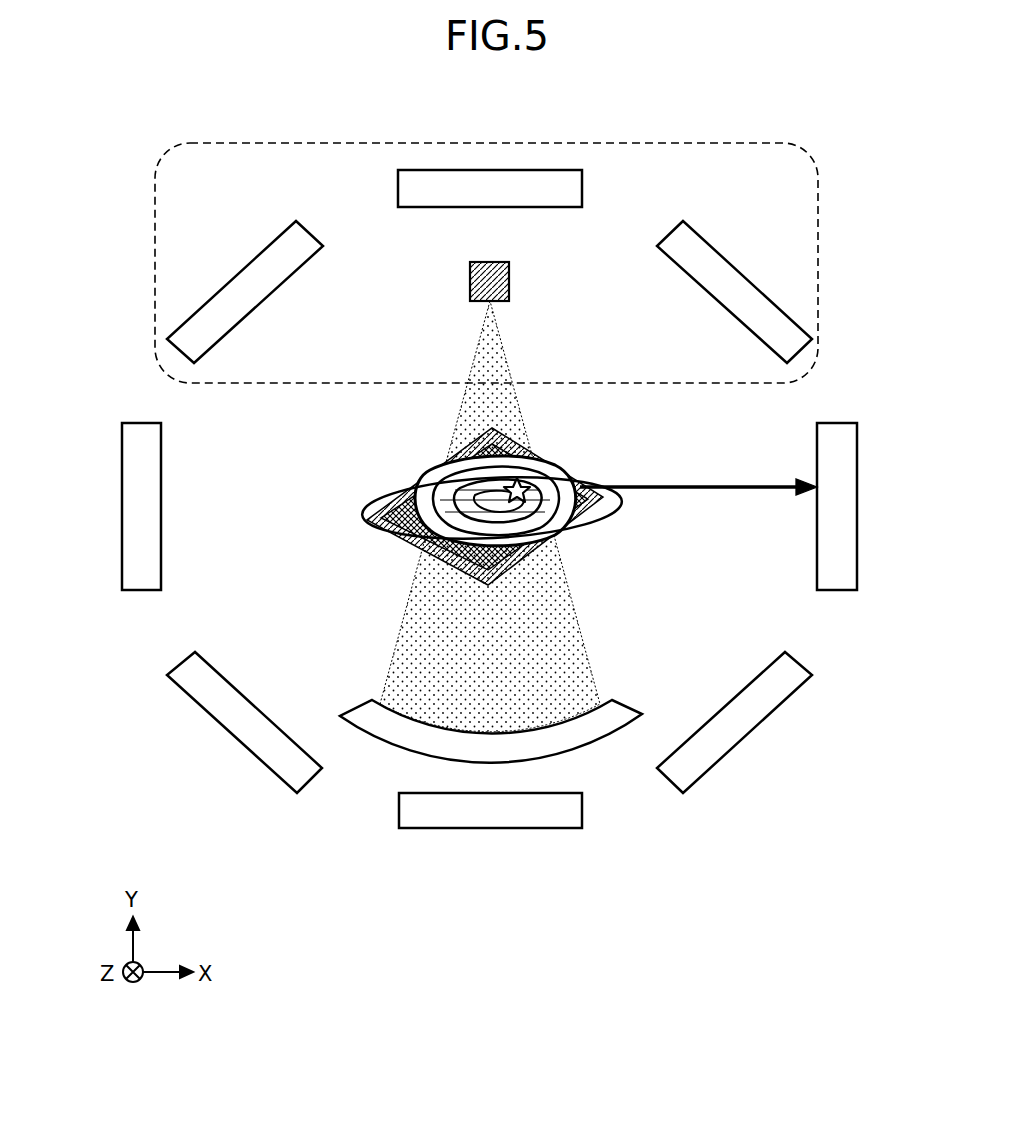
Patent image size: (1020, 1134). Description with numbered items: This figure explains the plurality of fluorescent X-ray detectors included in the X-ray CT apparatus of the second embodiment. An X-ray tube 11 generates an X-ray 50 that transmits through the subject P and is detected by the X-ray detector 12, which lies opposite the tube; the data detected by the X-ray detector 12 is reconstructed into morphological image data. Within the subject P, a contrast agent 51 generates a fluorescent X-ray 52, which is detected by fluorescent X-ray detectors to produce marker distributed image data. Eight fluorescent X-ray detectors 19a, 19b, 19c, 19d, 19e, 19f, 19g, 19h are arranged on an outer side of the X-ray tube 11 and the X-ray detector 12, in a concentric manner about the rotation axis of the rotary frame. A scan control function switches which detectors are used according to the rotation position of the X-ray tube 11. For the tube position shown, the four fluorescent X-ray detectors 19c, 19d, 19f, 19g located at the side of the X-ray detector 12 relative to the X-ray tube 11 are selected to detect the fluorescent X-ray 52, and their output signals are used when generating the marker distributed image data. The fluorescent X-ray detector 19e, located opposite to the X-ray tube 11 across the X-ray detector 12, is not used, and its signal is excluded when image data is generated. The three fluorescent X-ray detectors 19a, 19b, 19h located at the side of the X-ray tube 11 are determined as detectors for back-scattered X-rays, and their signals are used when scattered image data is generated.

The X-ray tube 11 is at (511, 283).
The X-ray 50 is at (503, 335).
The contrast agent 51 is at (522, 484).
The fluorescent X-ray 52 is at (712, 484).
The X-ray detector 12 is at (627, 702).
The subject P is at (362, 508).
The fluorescent X-ray detector 19a is at (492, 170).
The fluorescent X-ray detector 19b is at (737, 263).
The fluorescent X-ray detector 19c is at (817, 555).
The fluorescent X-ray detector 19d is at (752, 725).
The fluorescent X-ray detector 19e is at (490, 829).
The fluorescent X-ray detector 19f is at (230, 735).
The fluorescent X-ray detector 19g is at (161, 470).
The fluorescent X-ray detector 19h is at (247, 263).